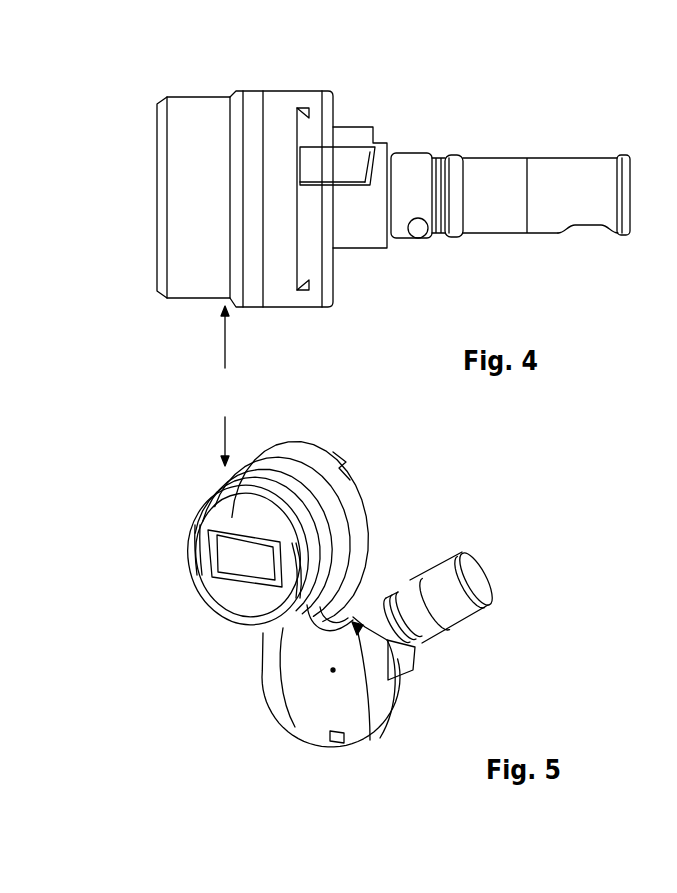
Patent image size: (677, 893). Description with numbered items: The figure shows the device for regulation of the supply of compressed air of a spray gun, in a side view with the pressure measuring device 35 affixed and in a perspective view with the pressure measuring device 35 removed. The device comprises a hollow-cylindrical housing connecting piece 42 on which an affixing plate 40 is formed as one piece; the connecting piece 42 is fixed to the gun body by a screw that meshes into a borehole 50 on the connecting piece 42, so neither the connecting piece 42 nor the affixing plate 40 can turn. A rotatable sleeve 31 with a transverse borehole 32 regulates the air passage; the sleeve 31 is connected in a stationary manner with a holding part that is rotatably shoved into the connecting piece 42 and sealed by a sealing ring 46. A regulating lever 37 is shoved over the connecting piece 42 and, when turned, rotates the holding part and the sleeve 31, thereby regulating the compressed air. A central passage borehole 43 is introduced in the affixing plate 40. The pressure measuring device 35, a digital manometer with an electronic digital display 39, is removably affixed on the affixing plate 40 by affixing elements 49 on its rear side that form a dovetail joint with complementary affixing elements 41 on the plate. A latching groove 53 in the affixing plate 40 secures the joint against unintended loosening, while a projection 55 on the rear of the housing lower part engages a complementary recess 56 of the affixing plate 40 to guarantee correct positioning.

In FIG. 4, the rotatable sleeve 31 is at (543, 173).
In FIG. 5, the rotatable sleeve 31 is at (443, 578).
In FIG. 4, the transverse borehole 32 is at (585, 226).
In FIG. 4, the pressure measuring device 35 is at (229, 386).
In FIG. 4, the regulating lever 37 is at (343, 163).
In FIG. 5, the regulating lever 37 is at (400, 653).
In FIG. 5, the electronic digital display 39 is at (248, 554).
In FIG. 4, the affixing plate 40 is at (315, 250).
In FIG. 5, the affixing plate 40 is at (313, 653).
In FIG. 4, the affixing elements 41 is at (306, 113).
In FIG. 5, the affixing elements 41 is at (360, 705).
In FIG. 4, the housing connecting piece 42 is at (413, 165).
In FIG. 5, the central passage borehole 43 is at (333, 670).
In FIG. 4, the sealing ring 46 is at (452, 238).
In FIG. 4, the affixing elements 49 is at (307, 116).
In FIG. 5, the affixing elements 49 is at (350, 472).
In FIG. 4, the borehole 50 is at (414, 236).
In FIG. 5, the latching groove 53 is at (338, 742).
In FIG. 5, the projection 55 is at (312, 443).
In FIG. 5, the recess 56 is at (333, 625).